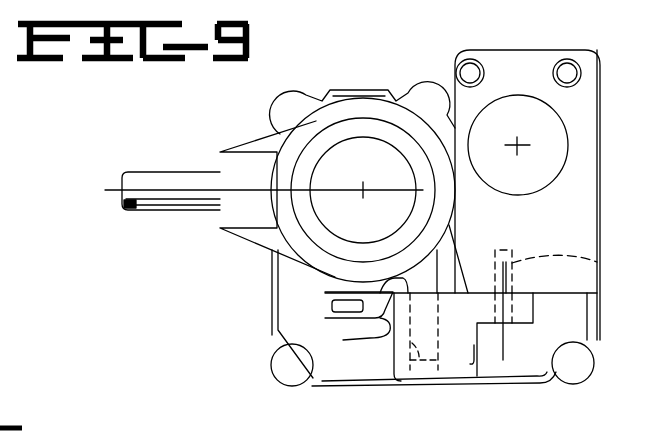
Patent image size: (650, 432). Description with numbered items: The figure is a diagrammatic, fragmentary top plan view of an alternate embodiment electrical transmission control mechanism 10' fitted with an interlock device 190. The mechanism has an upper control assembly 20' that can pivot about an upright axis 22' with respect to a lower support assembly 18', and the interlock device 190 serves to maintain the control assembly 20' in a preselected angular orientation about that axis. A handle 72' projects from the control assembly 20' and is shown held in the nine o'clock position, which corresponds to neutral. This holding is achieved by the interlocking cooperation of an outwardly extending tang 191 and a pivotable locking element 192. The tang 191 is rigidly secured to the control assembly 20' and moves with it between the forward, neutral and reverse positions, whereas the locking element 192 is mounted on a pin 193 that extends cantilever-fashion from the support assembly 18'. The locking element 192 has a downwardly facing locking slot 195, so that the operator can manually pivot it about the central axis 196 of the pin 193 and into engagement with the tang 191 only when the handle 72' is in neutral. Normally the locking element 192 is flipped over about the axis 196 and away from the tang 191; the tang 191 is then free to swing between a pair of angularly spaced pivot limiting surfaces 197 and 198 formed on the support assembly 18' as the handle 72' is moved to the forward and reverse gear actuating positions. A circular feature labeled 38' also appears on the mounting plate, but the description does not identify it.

The electrical transmission control mechanism 10' is at (330, 195).
The lower support assembly 18' is at (383, 218).
The upper control assembly 20' is at (307, 189).
The upright axis 22' is at (264, 190).
The mounting plate port 38' is at (518, 145).
The handle 72' is at (171, 171).
The interlock device 190 is at (396, 352).
The tang 191 is at (458, 258).
The locking element 192 is at (486, 384).
The pin 193 is at (597, 262).
The locking slot 195 is at (418, 375).
The central axis 196 is at (505, 345).
The pivot limiting surface 197 is at (346, 323).
The pivot limiting surface 198 is at (461, 274).